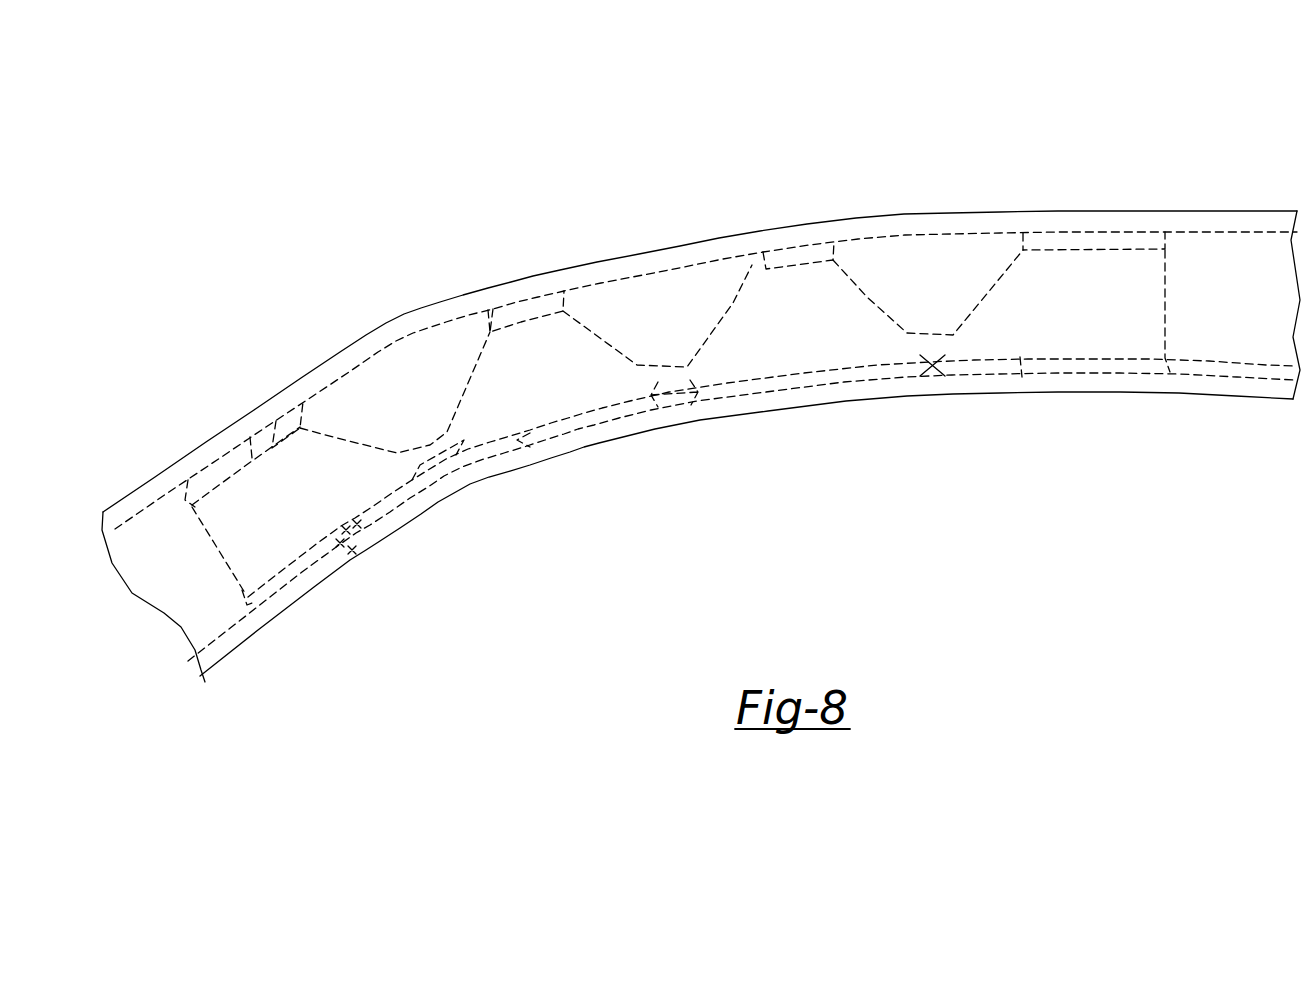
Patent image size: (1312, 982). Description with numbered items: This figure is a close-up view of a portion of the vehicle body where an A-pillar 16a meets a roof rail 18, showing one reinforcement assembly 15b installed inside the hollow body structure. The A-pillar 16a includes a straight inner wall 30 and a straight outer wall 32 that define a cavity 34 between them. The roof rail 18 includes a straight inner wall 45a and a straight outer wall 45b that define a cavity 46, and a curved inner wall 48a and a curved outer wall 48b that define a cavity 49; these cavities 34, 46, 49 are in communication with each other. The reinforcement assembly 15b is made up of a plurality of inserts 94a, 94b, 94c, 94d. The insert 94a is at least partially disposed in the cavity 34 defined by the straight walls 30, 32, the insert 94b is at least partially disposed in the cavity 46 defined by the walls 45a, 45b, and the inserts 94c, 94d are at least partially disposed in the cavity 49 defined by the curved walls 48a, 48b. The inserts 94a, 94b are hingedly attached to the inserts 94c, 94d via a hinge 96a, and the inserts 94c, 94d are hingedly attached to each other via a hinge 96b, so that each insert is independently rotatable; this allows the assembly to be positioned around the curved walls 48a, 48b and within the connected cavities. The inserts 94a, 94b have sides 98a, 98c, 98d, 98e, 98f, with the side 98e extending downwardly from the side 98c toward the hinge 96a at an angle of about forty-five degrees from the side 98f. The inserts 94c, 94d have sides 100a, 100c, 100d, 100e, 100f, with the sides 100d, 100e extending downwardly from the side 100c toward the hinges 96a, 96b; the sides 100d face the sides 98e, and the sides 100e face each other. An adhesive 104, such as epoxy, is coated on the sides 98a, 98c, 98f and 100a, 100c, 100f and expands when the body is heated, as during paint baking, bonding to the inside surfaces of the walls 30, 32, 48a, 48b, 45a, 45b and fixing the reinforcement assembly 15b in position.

The reinforcement assembly 15b is at (480, 306).
The A-pillar 16a is at (287, 641).
The roof rail 18 is at (1032, 193).
The straight inner wall 30 is at (290, 607).
The straight outer wall 32 is at (168, 468).
The cavity 34 is at (133, 517).
The straight inner wall 45a is at (1193, 397).
The straight outer wall 45b is at (1255, 211).
The cavity 46 is at (1237, 340).
The curved inner wall 48a is at (730, 418).
The curved outer wall 48b is at (707, 240).
The cavity 49 is at (867, 257).
The insert 94a is at (318, 410).
The insert 94b is at (1146, 232).
The insert 94c is at (541, 302).
The insert 94d is at (807, 249).
The hinge 96a is at (443, 487).
The hinge 96b is at (687, 400).
The side 98a is at (1057, 300).
The side 98c is at (1098, 248).
The side 98d is at (212, 548).
The side 98e is at (342, 432).
The side 98f is at (1100, 358).
The side 100a is at (780, 323).
The side 100c is at (775, 250).
The side 100d is at (878, 290).
The side 100e is at (730, 307).
The side 100f is at (845, 365).
The adhesive 104 is at (828, 243).